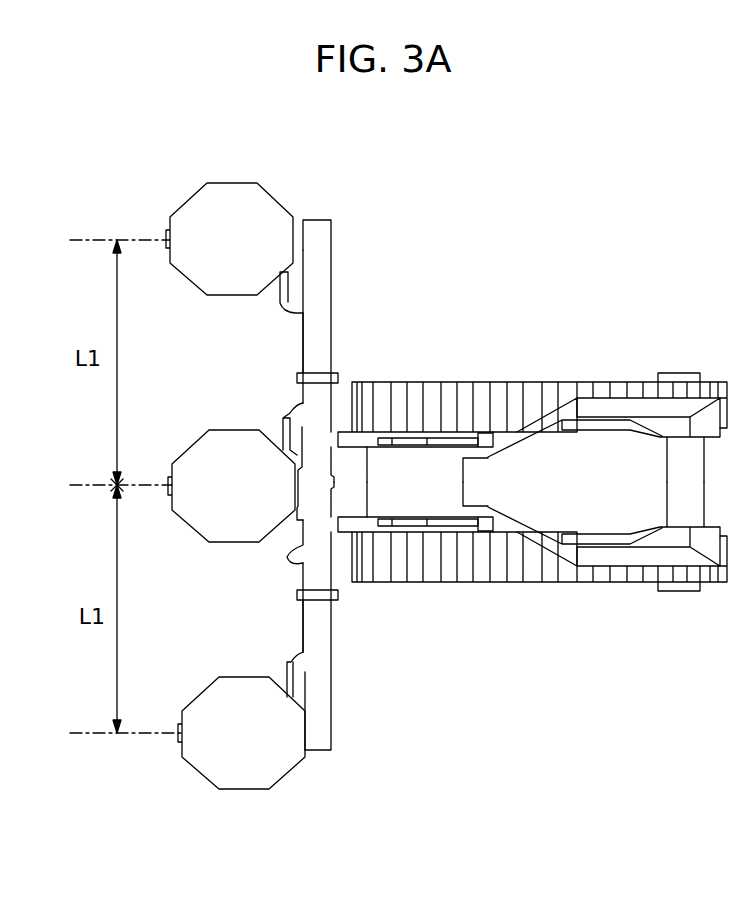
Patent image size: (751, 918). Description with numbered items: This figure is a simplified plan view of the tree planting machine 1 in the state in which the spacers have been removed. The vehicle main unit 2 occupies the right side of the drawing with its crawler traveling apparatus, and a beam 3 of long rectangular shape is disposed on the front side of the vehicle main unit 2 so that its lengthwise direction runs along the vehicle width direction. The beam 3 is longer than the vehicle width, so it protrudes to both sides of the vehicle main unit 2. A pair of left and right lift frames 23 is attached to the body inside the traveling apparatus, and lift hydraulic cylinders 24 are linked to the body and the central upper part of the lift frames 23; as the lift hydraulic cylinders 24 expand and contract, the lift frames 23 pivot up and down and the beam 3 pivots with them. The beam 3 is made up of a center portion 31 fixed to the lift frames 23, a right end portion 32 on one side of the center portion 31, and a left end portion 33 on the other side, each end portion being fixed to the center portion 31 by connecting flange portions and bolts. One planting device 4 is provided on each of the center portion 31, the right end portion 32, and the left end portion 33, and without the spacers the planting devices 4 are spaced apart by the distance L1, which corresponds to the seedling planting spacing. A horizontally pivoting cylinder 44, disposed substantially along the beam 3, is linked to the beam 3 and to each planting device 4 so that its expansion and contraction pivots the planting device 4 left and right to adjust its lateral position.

The tree planting machine 1 is at (529, 423).
The vehicle main unit 2 is at (547, 381).
The beam 3 is at (334, 720).
The planting device 4 is at (190, 218).
The lift frame 23 is at (380, 440).
The lift hydraulic cylinder 24 is at (445, 440).
The center portion 31 is at (300, 563).
The right end portion 32 is at (303, 338).
The left end portion 33 is at (303, 610).
The horizontally pivoting cylinder 44 is at (272, 303).